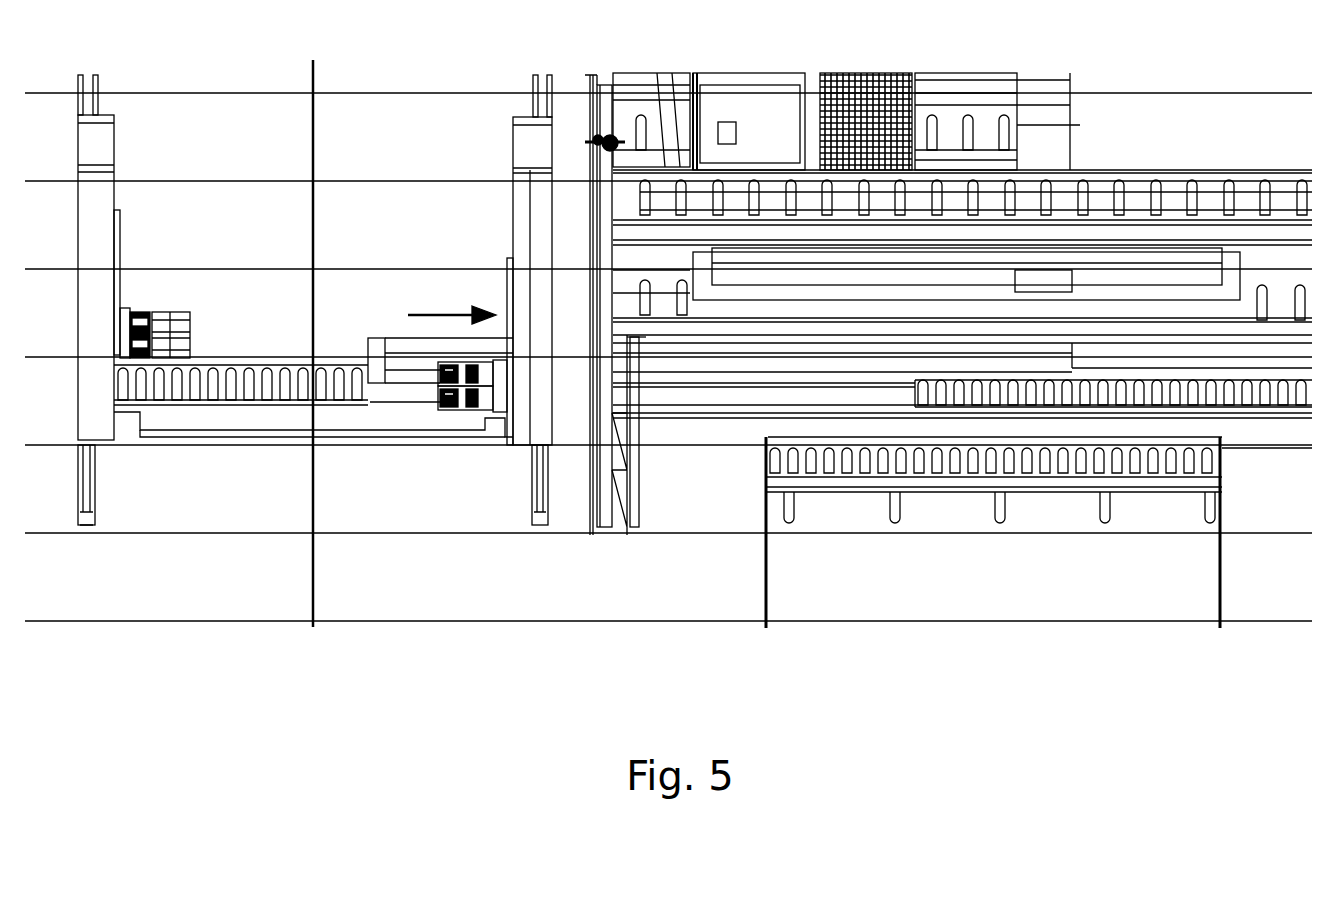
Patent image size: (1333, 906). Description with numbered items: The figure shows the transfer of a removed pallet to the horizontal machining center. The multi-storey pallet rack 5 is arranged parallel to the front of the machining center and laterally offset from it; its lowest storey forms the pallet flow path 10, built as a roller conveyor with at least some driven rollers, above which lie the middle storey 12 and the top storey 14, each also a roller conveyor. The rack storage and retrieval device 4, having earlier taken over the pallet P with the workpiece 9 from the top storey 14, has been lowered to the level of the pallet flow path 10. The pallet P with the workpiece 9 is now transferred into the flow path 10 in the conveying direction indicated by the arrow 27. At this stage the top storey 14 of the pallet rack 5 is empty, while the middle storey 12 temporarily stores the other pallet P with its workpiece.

The rack storage and retrieval device 4 is at (357, 455).
The pallet rack 5 is at (655, 185).
The workpiece 9 is at (395, 340).
The pallet flow path 10 is at (1043, 398).
The middle storey 12 is at (663, 308).
The top storey 14 is at (692, 200).
The arrow 27 is at (437, 310).
The pallet P is at (413, 400).